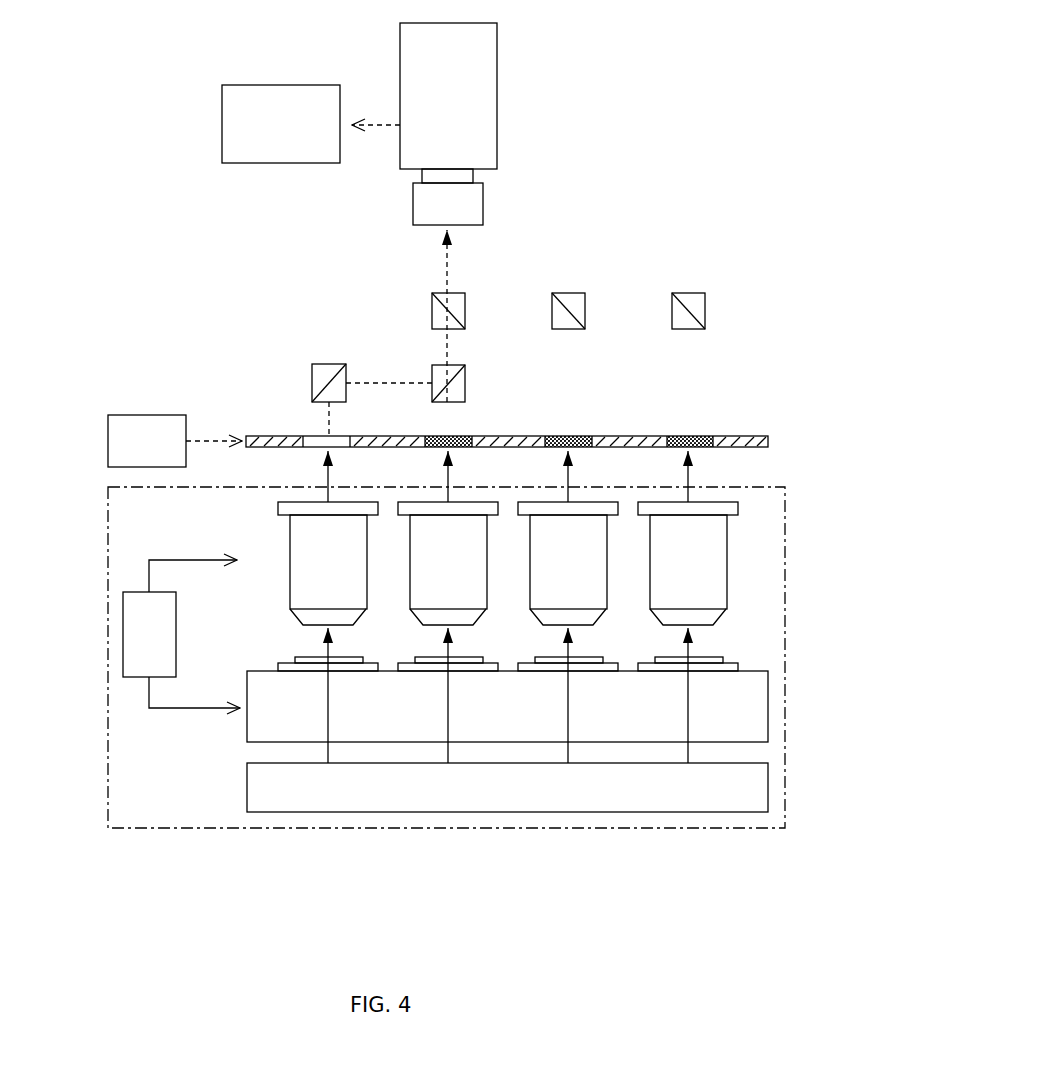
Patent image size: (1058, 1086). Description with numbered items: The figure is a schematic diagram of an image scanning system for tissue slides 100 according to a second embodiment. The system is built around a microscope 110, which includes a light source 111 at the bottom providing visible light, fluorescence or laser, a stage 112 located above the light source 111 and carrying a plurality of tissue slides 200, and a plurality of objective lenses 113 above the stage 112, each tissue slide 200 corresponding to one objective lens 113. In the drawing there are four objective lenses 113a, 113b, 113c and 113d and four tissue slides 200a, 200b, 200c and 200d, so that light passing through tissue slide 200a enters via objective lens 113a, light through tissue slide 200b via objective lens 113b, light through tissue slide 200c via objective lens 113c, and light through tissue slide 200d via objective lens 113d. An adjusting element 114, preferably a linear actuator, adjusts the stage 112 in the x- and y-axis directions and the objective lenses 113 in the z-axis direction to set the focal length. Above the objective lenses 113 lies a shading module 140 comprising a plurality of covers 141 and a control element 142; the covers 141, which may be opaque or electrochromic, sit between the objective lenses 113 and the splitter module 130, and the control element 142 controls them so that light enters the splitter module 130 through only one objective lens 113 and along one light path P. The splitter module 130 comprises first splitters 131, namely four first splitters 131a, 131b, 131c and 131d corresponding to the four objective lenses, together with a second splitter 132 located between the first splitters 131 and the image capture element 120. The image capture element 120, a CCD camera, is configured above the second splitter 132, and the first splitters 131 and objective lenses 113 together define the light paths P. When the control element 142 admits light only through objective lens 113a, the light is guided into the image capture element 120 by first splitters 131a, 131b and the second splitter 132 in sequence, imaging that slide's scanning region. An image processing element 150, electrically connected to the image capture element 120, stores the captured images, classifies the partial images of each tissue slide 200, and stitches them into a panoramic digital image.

The image scanning system for tissue slides 100 is at (680, 125).
The microscope 110 is at (190, 830).
The light source 111 is at (752, 792).
The stage 112 is at (752, 715).
The objective lenses 113 is at (555, 711).
The objective lens 113a is at (313, 588).
The objective lens 113b is at (433, 588).
The objective lens 113c is at (553, 588).
The objective lens 113d is at (673, 588).
The adjusting element 114 is at (123, 632).
The image capture element 120 is at (480, 88).
The splitter module 130 is at (509, 325).
The first splitters 131 is at (470, 331).
The first splitter 131a is at (330, 362).
The first splitter 131b is at (470, 390).
The first splitter 131c is at (565, 292).
The first splitter 131d is at (685, 292).
The second splitter 132 is at (458, 292).
The shading module 140 is at (420, 395).
The covers 141 is at (680, 435).
The control element 142 is at (162, 414).
The image processing element 150 is at (250, 95).
The tissue slides 200 is at (563, 764).
The tissue slide 200a is at (345, 668).
The tissue slide 200b is at (465, 668).
The tissue slide 200c is at (585, 668).
The tissue slide 200d is at (705, 668).
The light paths P is at (705, 472).